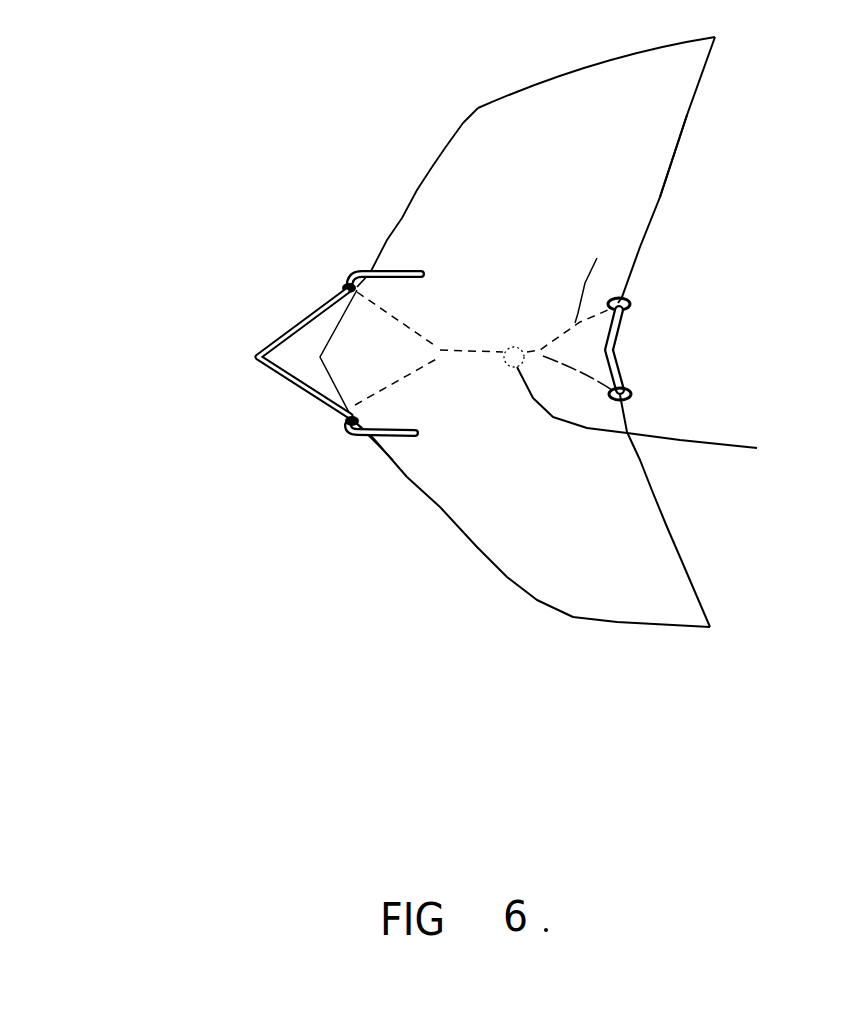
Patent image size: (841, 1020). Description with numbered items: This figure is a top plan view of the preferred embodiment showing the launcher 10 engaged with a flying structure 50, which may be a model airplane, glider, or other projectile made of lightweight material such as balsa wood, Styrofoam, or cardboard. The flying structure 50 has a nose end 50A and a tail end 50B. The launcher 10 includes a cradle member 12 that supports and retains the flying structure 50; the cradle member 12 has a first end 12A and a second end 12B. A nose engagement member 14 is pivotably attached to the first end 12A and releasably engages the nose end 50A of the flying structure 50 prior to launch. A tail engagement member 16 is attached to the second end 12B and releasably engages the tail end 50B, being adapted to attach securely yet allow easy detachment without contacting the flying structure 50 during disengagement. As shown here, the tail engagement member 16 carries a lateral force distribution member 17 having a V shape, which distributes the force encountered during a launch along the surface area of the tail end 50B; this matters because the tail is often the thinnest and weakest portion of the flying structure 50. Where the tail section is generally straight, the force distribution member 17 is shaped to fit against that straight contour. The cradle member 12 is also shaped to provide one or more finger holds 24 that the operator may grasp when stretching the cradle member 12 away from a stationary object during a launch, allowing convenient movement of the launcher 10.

The launcher 10 is at (175, 357).
The cradle member 12 is at (420, 323).
The first end 12A is at (347, 288).
The second end 12B is at (597, 258).
The nose engagement member 14 is at (275, 377).
The tail engagement member 16 is at (630, 332).
The lateral force distribution member 17 is at (623, 370).
The finger hold 24 is at (666, 415).
The flying structure 50 is at (530, 502).
The nose end 50A is at (365, 348).
The tail end 50B is at (640, 248).